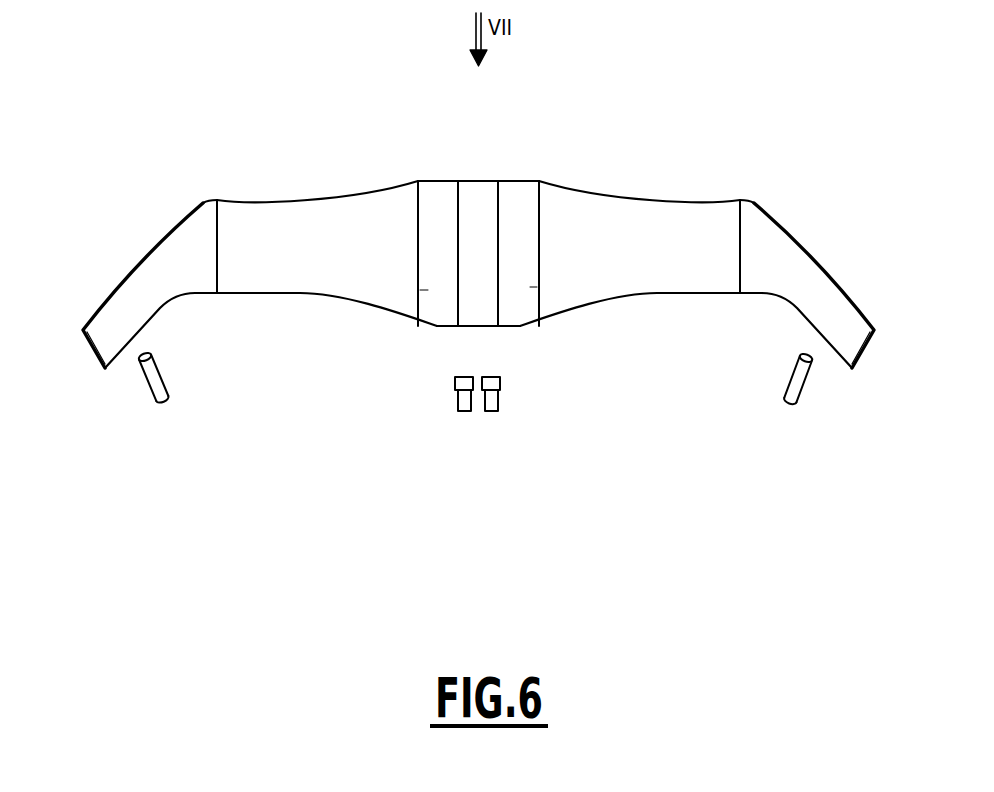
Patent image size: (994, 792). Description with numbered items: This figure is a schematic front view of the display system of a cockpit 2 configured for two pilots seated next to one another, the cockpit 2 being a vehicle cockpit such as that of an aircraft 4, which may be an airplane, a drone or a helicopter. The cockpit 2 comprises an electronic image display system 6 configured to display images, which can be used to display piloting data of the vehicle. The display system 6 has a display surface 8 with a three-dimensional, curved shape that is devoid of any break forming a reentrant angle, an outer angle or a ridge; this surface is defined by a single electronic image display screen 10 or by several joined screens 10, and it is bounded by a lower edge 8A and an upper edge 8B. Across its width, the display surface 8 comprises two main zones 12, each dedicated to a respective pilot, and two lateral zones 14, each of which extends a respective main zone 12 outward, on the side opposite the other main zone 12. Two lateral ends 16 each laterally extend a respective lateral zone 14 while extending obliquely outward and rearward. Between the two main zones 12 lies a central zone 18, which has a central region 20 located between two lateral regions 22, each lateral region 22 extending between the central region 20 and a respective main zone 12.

The cockpit 2 is at (670, 151).
The aircraft 4 is at (750, 116).
The electronic image display system 6 is at (355, 167).
The display surface 8 is at (480, 202).
The lower edge 8A is at (517, 328).
The upper edge 8B is at (512, 181).
The electronic image display screen 10 is at (435, 184).
The main zone 12 is at (293, 225).
The lateral zone 14 is at (195, 227).
The lateral end 16 is at (118, 310).
The central zone 18 is at (446, 332).
The central region 20 is at (478, 310).
The lateral region 22 is at (428, 288).